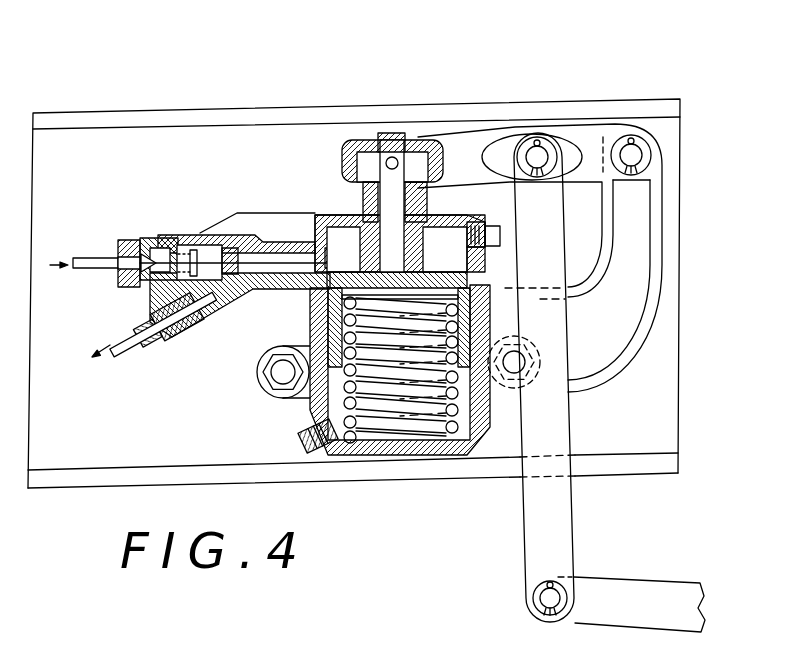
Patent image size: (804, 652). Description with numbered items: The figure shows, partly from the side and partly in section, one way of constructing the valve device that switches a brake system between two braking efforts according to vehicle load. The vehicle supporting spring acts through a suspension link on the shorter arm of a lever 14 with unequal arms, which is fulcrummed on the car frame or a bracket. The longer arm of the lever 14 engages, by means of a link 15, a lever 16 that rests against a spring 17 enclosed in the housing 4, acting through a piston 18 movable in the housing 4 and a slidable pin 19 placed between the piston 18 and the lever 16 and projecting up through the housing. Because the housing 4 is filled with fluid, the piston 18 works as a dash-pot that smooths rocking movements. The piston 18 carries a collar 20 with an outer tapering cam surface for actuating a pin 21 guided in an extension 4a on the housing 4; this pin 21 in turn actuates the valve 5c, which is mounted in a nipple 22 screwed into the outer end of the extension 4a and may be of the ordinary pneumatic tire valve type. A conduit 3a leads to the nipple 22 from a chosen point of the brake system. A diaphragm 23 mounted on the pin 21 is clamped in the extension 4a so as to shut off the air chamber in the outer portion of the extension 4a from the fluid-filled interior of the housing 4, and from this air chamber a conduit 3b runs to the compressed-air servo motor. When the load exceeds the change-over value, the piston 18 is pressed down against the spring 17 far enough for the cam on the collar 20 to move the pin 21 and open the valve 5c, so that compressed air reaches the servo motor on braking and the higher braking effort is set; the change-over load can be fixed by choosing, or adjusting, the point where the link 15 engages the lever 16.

The conduit 3a is at (86, 258).
The conduit 3b is at (122, 343).
The housing 4 is at (310, 302).
The extension 4a is at (206, 233).
The valve 5c is at (130, 242).
The lever 14 is at (610, 590).
The link 15 is at (537, 542).
The lever 16 is at (470, 145).
The spring 17 is at (310, 405).
The piston 18 is at (305, 297).
The slidable pin 19 is at (343, 172).
The collar 20 is at (332, 230).
The pin 21 is at (268, 258).
The nipple 22 is at (150, 238).
The diaphragm 23 is at (238, 275).